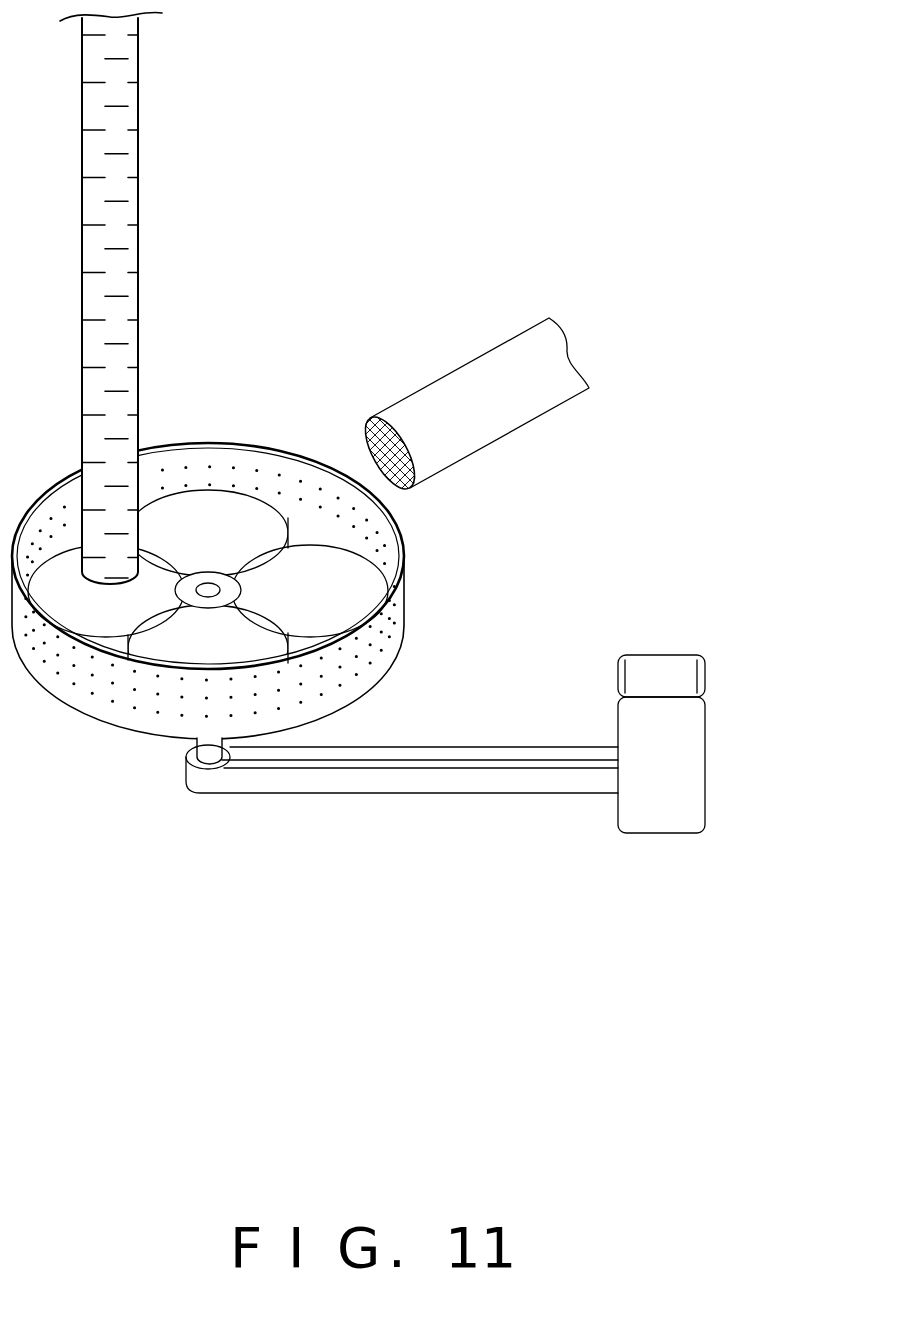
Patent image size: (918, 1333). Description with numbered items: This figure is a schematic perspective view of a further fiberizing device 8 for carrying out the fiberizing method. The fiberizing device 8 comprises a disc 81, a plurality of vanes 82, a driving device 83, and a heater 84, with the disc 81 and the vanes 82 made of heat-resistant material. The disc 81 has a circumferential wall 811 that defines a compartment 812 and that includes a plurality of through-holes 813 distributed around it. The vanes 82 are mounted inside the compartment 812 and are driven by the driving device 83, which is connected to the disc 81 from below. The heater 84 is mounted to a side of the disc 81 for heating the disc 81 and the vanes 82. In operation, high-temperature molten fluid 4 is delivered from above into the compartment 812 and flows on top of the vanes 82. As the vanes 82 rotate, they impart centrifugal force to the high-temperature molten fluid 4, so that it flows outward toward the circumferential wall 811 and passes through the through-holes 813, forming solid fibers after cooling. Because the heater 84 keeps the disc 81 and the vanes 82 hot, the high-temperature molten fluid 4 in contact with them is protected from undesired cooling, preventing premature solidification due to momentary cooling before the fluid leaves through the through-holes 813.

The high-temperature molten fluid 4 is at (138, 205).
The fiberizing device 8 is at (358, 545).
The disc 81 is at (286, 572).
The circumferential wall 811 is at (402, 552).
The compartment 812 is at (296, 540).
The through-holes 813 is at (402, 633).
The vanes 82 is at (208, 572).
The driving device 83 is at (637, 805).
The heater 84 is at (505, 435).